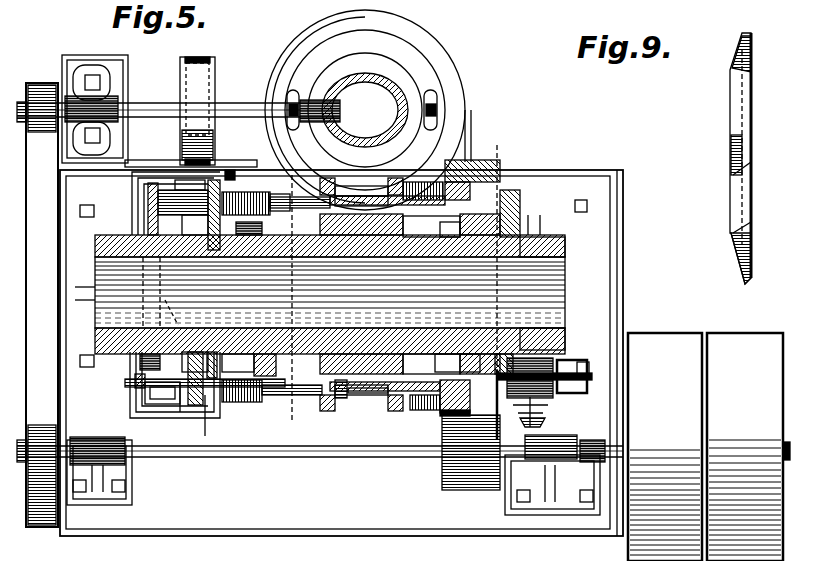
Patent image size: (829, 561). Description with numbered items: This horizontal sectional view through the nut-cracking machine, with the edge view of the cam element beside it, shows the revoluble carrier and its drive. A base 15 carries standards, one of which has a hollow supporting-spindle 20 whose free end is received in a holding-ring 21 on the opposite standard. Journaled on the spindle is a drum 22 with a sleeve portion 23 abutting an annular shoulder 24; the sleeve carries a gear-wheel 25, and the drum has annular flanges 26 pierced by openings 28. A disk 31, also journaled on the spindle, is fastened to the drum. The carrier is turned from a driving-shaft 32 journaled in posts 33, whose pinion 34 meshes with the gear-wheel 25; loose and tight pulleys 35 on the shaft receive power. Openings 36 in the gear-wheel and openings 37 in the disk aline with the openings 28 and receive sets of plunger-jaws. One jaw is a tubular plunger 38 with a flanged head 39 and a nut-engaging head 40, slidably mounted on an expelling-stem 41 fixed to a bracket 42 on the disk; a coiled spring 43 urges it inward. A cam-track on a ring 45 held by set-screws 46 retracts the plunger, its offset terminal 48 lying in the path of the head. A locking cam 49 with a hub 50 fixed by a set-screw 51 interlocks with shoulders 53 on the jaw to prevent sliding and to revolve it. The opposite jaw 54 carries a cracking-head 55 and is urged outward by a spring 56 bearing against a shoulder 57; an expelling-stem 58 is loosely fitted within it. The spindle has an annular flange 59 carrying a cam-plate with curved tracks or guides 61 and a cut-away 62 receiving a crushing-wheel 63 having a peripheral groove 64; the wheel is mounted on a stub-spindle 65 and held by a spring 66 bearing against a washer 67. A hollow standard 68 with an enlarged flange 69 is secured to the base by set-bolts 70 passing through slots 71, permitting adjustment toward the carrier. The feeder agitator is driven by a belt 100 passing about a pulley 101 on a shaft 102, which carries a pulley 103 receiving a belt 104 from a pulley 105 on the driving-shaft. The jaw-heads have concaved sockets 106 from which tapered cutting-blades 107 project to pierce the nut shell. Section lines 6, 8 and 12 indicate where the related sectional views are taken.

In FIG. 5, the section line 6 is at (221, 307).
In FIG. 5, the section line 8 is at (501, 282).
In FIG. 5, the section line 12 is at (292, 300).
In FIG. 5, the base 15 is at (341, 348).
In FIG. 5, the supporting-spindle 20 is at (95, 313).
In FIG. 5, the holding-ring 21 is at (95, 245).
In FIG. 5, the drum 22 is at (343, 354).
In FIG. 5, the sleeve portion 23 is at (445, 354).
In FIG. 5, the annular shoulder 24 is at (534, 293).
In FIG. 5, the gear-wheel 25 is at (460, 160).
In FIG. 5, the annular outstanding flanges 26 is at (327, 178).
In FIG. 5, the openings 28 is at (321, 408).
In FIG. 5, the disk 31 is at (178, 206).
In FIG. 5, the driving-shaft 32 is at (290, 460).
In FIG. 5, the posts 33 is at (96, 430).
In FIG. 5, the pinion 34 is at (465, 490).
In FIG. 5, the loose and tight pulleys 35 is at (716, 340).
In FIG. 5, the openings 36 is at (447, 423).
In FIG. 5, the openings 37 is at (218, 410).
In FIG. 5, the tubular plunger 38 is at (250, 408).
In FIG. 5, the flanged head 39 is at (178, 412).
In FIG. 5, the nut-engaging head 40 is at (356, 190).
In FIG. 5, the expelling-stem 41 is at (130, 386).
In FIG. 5, the bracket 42 is at (160, 172).
In FIG. 5, the coiled spring 43 is at (162, 393).
In FIG. 5, the ring 45 is at (98, 287).
In FIG. 5, the set-screws 46 is at (134, 372).
In FIG. 5, the offset terminal 48 is at (184, 316).
In FIG. 5, the locking cam 49 is at (252, 362).
In FIG. 5, the hub 50 is at (293, 214).
In FIG. 5, the set-screw 51 is at (244, 227).
In FIG. 5, the threads or shoulders 53 is at (258, 190).
In FIG. 5, the jaw 54 is at (431, 226).
In FIG. 5, the cracking-head 55 is at (360, 186).
In FIG. 5, the spring 56 is at (430, 410).
In FIG. 5, the shoulder 57 is at (457, 274).
In FIG. 5, the expelling-stem 58 is at (435, 297).
In FIG. 5, the annular flange 59 is at (510, 190).
In FIG. 9, the annular flange 59 is at (752, 158).
In FIG. 5, the tracks or guides 61 is at (520, 210).
In FIG. 9, the tracks or guides 61 is at (733, 140).
In FIG. 5, the cut-away portion 62 is at (550, 365).
In FIG. 9, the cut-away portion 62 is at (732, 232).
In FIG. 5, the crushing-wheel 63 is at (568, 393).
In FIG. 5, the peripheral groove 64 is at (592, 376).
In FIG. 5, the stub-spindle 65 is at (551, 447).
In FIG. 5, the spring 66 is at (548, 408).
In FIG. 5, the washer 67 is at (551, 431).
In FIG. 5, the hollow standard 68 is at (380, 72).
In FIG. 5, the enlarged flange 69 is at (368, 110).
In FIG. 5, the set-bolts 70 is at (291, 122).
In FIG. 5, the slots 71 is at (294, 88).
In FIG. 5, the belt 100 is at (206, 55).
In FIG. 5, the pulley 101 is at (206, 92).
In FIG. 5, the shaft 102 is at (152, 97).
In FIG. 5, the pulley 103 is at (30, 86).
In FIG. 5, the belt 104 is at (56, 230).
In FIG. 5, the pulley 105 is at (32, 528).
In FIG. 5, the sockets 106 is at (364, 411).
In FIG. 5, the cutting-blades 107 is at (387, 297).